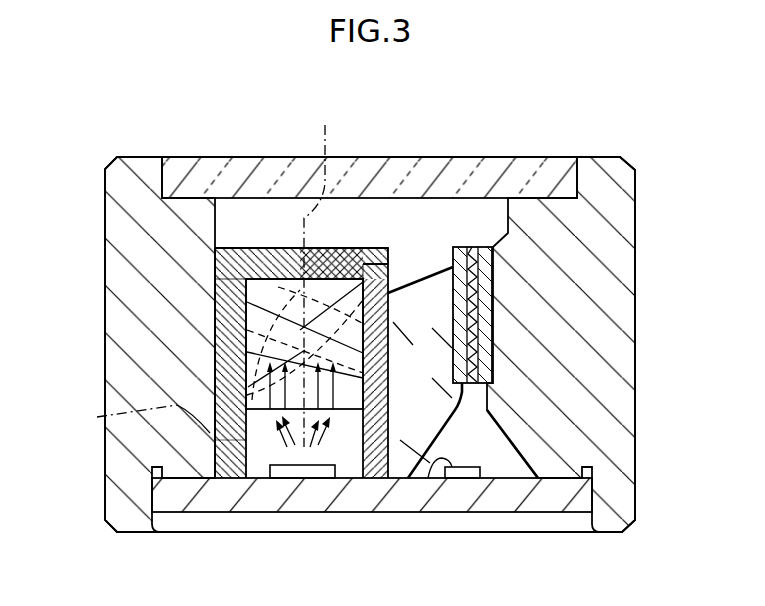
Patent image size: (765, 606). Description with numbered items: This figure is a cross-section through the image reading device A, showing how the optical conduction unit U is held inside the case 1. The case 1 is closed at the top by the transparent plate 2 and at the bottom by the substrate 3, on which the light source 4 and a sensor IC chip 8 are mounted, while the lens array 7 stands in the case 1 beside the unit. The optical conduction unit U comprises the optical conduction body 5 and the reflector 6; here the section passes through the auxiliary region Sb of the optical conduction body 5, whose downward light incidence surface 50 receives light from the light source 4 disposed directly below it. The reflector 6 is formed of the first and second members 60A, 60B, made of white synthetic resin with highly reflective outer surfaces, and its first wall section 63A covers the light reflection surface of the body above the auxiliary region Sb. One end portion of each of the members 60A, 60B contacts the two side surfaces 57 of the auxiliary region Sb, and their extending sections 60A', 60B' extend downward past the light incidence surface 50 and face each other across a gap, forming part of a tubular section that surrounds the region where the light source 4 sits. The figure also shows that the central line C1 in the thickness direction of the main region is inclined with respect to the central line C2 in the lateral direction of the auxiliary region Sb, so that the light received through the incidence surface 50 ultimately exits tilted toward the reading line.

The case 1 is at (623, 272).
The transparent plate 2 is at (217, 175).
The substrate 3 is at (183, 495).
The light source 4 is at (297, 480).
The optical conduction body 5 is at (348, 262).
The reflector 6 is at (247, 243).
The lens array 7 is at (500, 337).
The sensor IC chips 8 is at (463, 480).
The light incidence surface 50 is at (352, 438).
The side surfaces of the auxiliary region 57 is at (245, 348).
The first member 60A is at (244, 344).
The second member 60B is at (376, 365).
The extending section of the first member 60A' is at (233, 506).
The extending section of the second member 60B' is at (405, 482).
The first wall section 63A is at (262, 275).
The image reading device A is at (517, 140).
The central line in the thickness direction of the main region C1 is at (97, 417).
The central line in the lateral direction of the auxiliary region C2 is at (322, 270).
The auxiliary region Sb is at (283, 290).
The optical conduction unit U is at (208, 302).